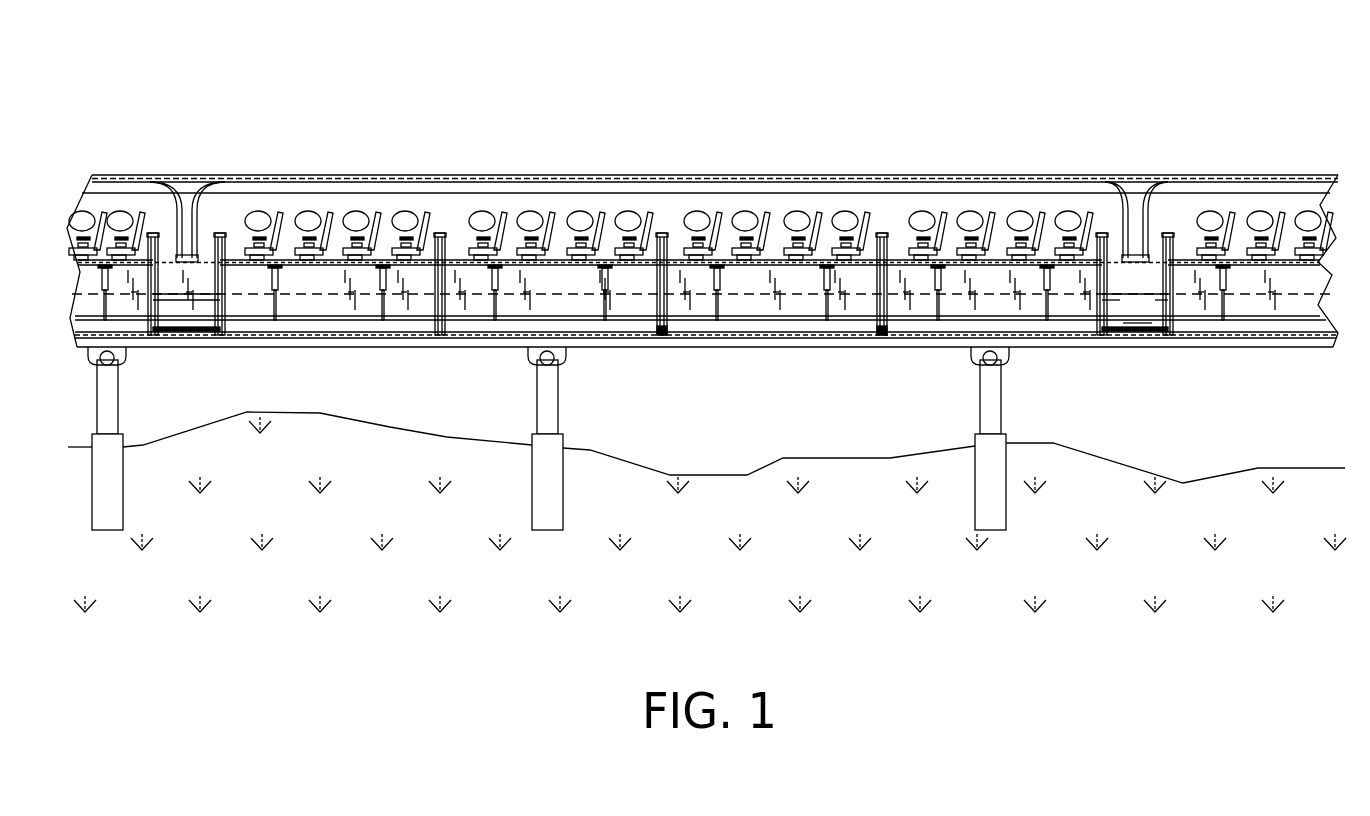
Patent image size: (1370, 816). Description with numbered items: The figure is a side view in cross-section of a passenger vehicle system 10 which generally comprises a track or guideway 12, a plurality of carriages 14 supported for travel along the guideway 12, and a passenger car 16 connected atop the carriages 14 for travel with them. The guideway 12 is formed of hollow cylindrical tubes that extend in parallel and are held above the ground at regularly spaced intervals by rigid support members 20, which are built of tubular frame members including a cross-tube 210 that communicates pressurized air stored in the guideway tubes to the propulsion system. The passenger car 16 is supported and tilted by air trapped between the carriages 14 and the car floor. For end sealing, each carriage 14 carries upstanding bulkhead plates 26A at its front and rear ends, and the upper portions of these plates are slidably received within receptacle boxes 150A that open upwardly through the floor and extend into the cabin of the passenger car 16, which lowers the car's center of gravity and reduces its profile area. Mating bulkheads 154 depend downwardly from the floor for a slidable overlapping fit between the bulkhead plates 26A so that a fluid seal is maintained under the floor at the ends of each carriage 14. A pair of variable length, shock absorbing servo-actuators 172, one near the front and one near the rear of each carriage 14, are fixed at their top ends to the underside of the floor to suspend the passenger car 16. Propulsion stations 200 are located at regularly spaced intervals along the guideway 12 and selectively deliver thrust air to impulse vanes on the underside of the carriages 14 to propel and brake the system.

The passenger vehicle system 10 is at (938, 102).
The guideway 12 is at (1135, 312).
The carriage 14 is at (340, 287).
The passenger car 16 is at (566, 176).
The support member 20 is at (118, 416).
The left bulkhead plate 26A is at (663, 333).
The left receptacle box 150A is at (220, 233).
The mating bulkhead 154 is at (666, 272).
The servo-actuator 172 is at (275, 297).
The propulsion station 200 is at (118, 352).
The cross-tube 210 is at (111, 365).